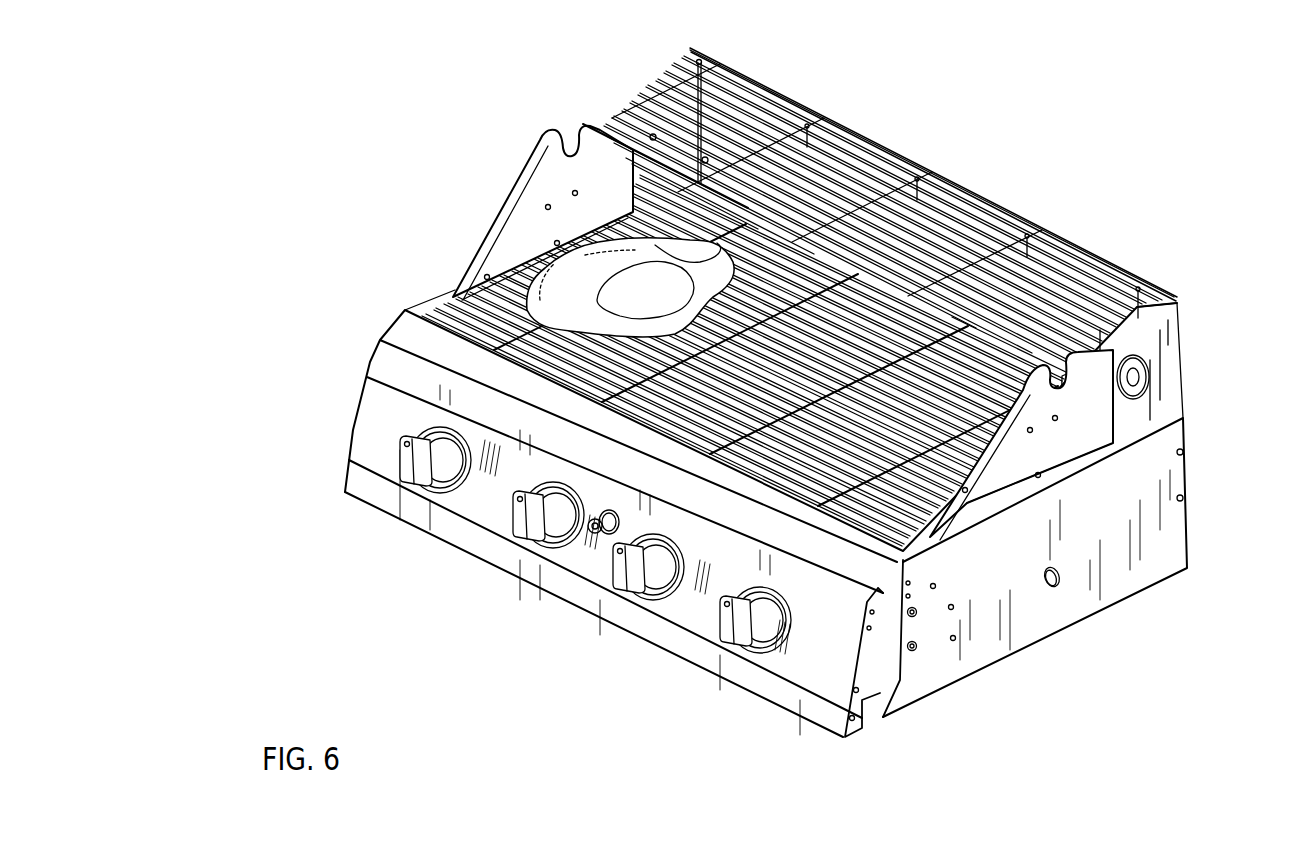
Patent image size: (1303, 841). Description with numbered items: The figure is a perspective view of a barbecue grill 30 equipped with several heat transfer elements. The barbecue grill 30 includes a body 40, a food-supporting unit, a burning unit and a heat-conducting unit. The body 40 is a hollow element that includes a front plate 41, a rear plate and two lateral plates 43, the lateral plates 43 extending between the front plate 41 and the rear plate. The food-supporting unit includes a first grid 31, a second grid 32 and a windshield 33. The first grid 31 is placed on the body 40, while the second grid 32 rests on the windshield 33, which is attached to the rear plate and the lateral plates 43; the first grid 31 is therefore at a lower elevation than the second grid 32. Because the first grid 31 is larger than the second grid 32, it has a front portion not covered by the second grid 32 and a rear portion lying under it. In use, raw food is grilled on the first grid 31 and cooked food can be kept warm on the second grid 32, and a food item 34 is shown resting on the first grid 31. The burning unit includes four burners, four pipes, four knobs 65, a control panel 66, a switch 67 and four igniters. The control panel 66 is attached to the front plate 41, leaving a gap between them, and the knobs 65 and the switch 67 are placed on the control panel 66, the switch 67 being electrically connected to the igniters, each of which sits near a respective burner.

The barbecue grill 30 is at (403, 173).
The first grid 31 is at (455, 297).
The second grid 32 is at (1057, 273).
The windshield 33 is at (1180, 367).
The food item 34 is at (577, 270).
The body 40 is at (386, 332).
The front plate 41 is at (890, 563).
The lateral plates 43 is at (1133, 580).
The knobs 65 is at (527, 498).
The control panel 66 is at (383, 493).
The switch 67 is at (587, 530).